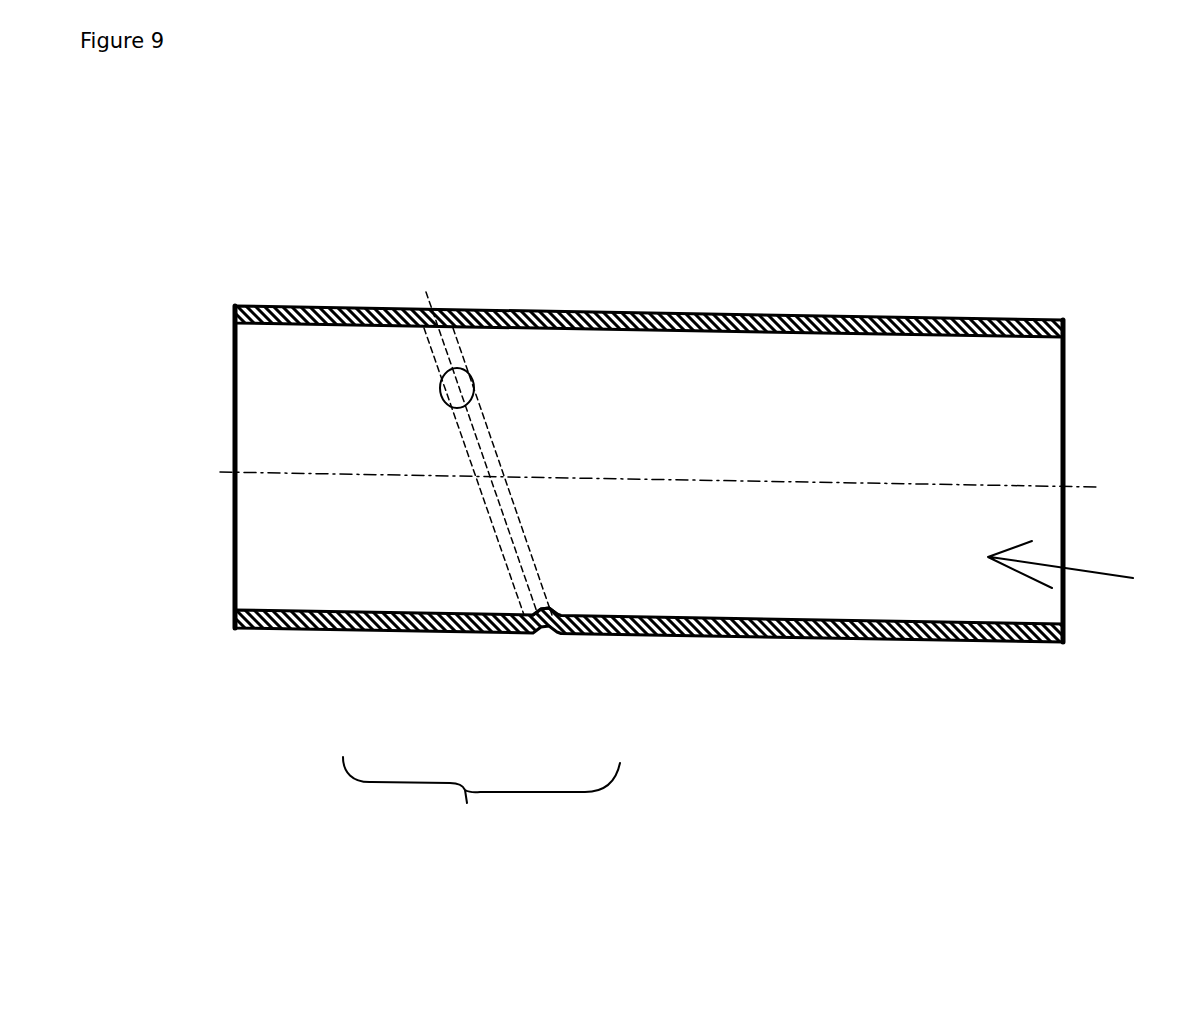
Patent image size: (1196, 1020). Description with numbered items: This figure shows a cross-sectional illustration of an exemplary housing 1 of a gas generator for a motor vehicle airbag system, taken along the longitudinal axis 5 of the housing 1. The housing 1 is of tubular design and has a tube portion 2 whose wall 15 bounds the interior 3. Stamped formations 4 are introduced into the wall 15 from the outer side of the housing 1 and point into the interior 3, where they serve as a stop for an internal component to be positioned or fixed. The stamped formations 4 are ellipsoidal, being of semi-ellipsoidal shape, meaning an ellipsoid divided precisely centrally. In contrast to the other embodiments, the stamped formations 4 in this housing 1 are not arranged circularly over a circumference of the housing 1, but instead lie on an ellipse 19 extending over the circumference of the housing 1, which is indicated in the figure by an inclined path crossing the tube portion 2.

The housing 1 is at (942, 147).
The tube portion 2 is at (481, 829).
The interior 3 is at (1092, 576).
The stamped formations 4 is at (462, 387).
The longitudinal axis 5 is at (947, 477).
The wall 15 is at (940, 323).
The ellipse 19 is at (503, 532).